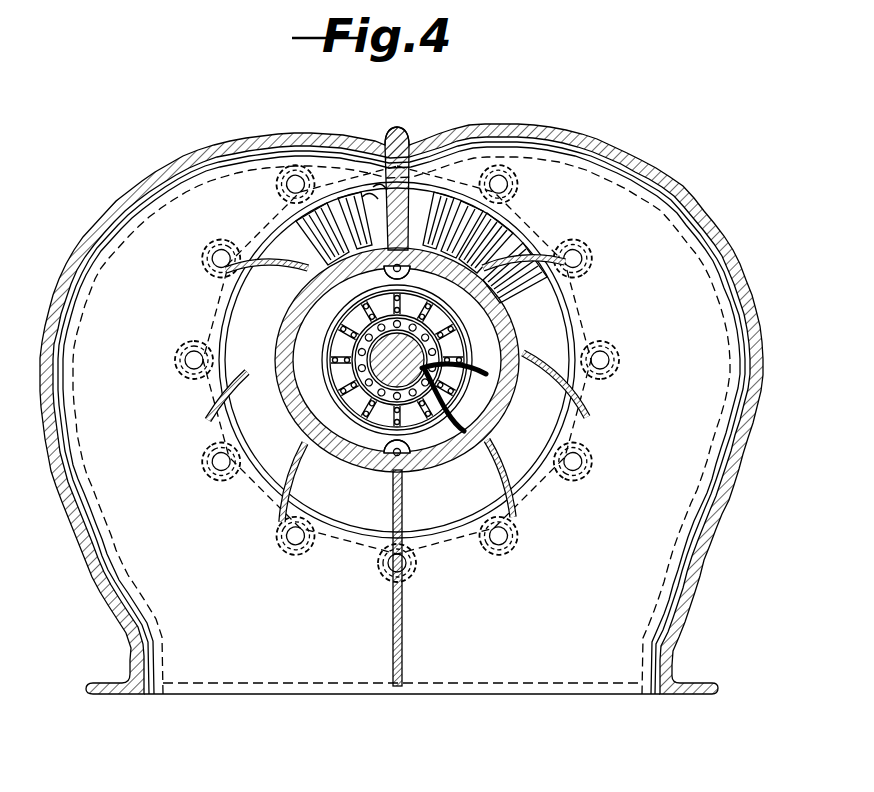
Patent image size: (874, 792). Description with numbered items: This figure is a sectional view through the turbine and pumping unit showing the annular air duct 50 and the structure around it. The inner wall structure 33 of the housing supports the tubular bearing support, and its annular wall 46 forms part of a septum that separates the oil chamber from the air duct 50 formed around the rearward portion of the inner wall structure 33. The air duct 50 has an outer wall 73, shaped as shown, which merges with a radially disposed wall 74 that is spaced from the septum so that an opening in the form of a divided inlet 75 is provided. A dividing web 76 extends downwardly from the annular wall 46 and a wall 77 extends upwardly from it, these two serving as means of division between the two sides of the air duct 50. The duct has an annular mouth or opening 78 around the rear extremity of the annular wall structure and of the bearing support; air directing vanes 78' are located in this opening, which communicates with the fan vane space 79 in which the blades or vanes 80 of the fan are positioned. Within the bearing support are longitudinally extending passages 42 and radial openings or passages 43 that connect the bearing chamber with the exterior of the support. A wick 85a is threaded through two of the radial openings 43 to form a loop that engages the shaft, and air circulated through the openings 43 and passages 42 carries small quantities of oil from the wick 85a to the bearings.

The outer wall 73 is at (128, 200).
The radially disposed wall 74 is at (603, 607).
The divided inlet 75 is at (451, 644).
The dividing web 76 is at (402, 600).
The wall 77 is at (400, 190).
The fan vane space 79 is at (364, 200).
The blades or vanes 80 is at (381, 190).
The annular air duct 50 is at (522, 170).
The annular wall 46 is at (500, 255).
The annular mouth or opening 78 is at (576, 415).
The air directing vanes 78' is at (376, 362).
The longitudinally extending passages 42 is at (335, 353).
The radial openings or passages 43 is at (612, 368).
The inner wall structure 33 is at (545, 480).
The wick 85a is at (450, 431).